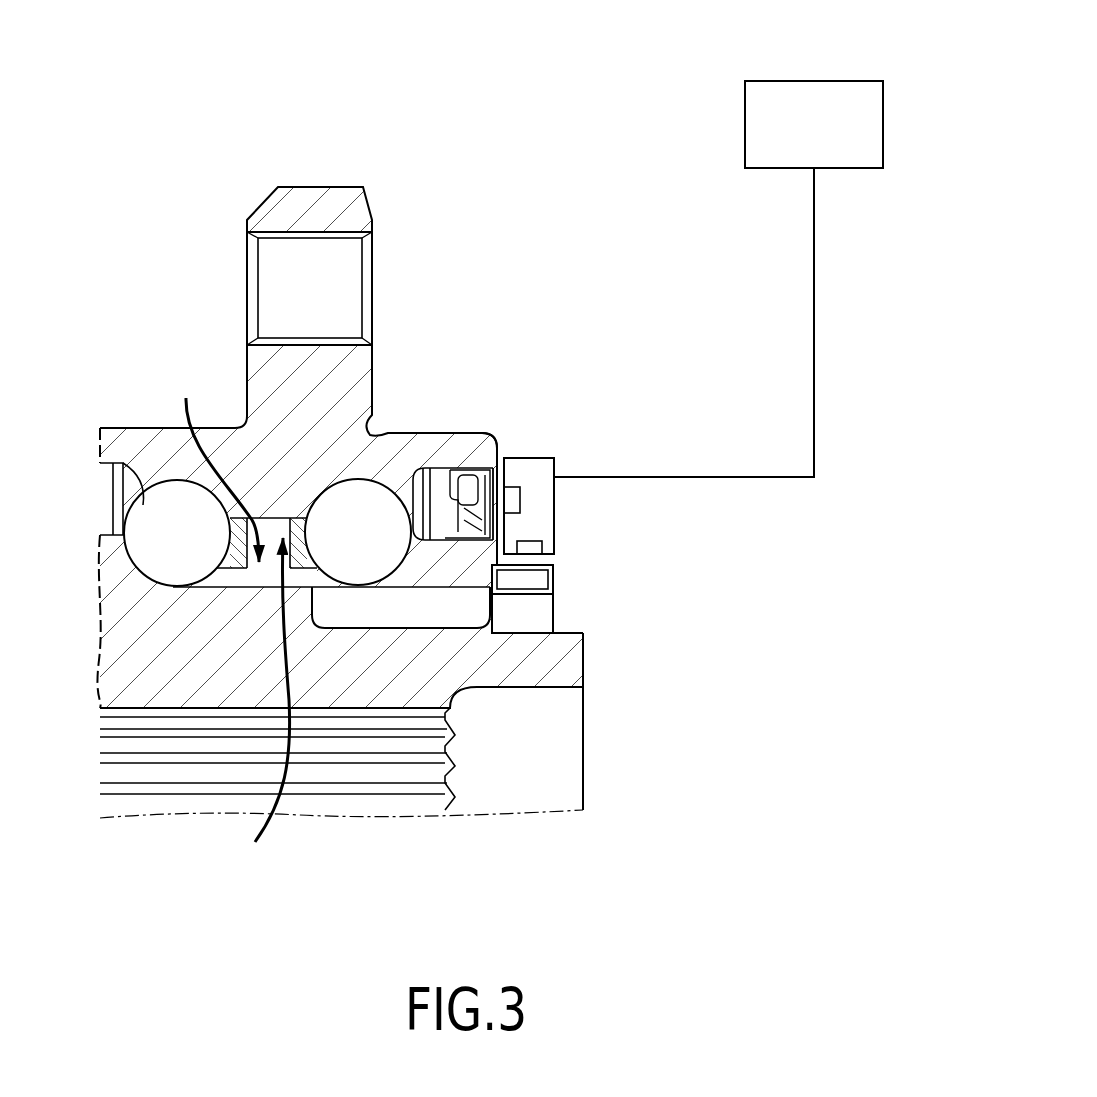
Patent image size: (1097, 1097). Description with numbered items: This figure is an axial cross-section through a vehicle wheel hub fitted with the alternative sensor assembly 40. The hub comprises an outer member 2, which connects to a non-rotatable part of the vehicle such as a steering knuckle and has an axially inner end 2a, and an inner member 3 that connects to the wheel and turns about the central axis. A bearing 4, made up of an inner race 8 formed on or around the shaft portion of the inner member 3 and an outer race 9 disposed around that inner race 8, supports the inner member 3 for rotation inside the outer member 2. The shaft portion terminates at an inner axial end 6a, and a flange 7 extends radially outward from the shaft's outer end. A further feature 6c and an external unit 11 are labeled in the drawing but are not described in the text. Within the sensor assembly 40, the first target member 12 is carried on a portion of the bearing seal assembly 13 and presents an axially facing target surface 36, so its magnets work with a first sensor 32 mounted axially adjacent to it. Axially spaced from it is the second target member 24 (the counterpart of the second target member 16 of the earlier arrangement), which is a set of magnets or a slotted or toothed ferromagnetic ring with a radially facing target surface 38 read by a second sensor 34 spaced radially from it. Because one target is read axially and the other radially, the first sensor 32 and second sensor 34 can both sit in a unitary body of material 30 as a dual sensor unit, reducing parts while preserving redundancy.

The outer member 2 is at (336, 450).
The axially inner end 2a is at (450, 453).
The inner member 3 is at (558, 658).
The bearing 4 is at (82, 531).
The inner axial end 6a is at (583, 637).
The knuckle abutment surface 6c is at (515, 655).
The flange 7 is at (320, 198).
The inner race 8 is at (222, 467).
The outer race 9 is at (264, 704).
The control unit 11 is at (803, 93).
The first target member 12 is at (495, 487).
The bearing seal assembly 13 is at (472, 480).
The second target member 16 is at (572, 606).
The second target member 24 is at (540, 583).
The unitary body of material 30 is at (548, 465).
The first sensor 32 is at (518, 502).
The second sensor 34 is at (532, 543).
The axially facing target surface 36 is at (498, 507).
The radially facing target surface 38 is at (538, 560).
The sensor assembly 40 is at (612, 406).